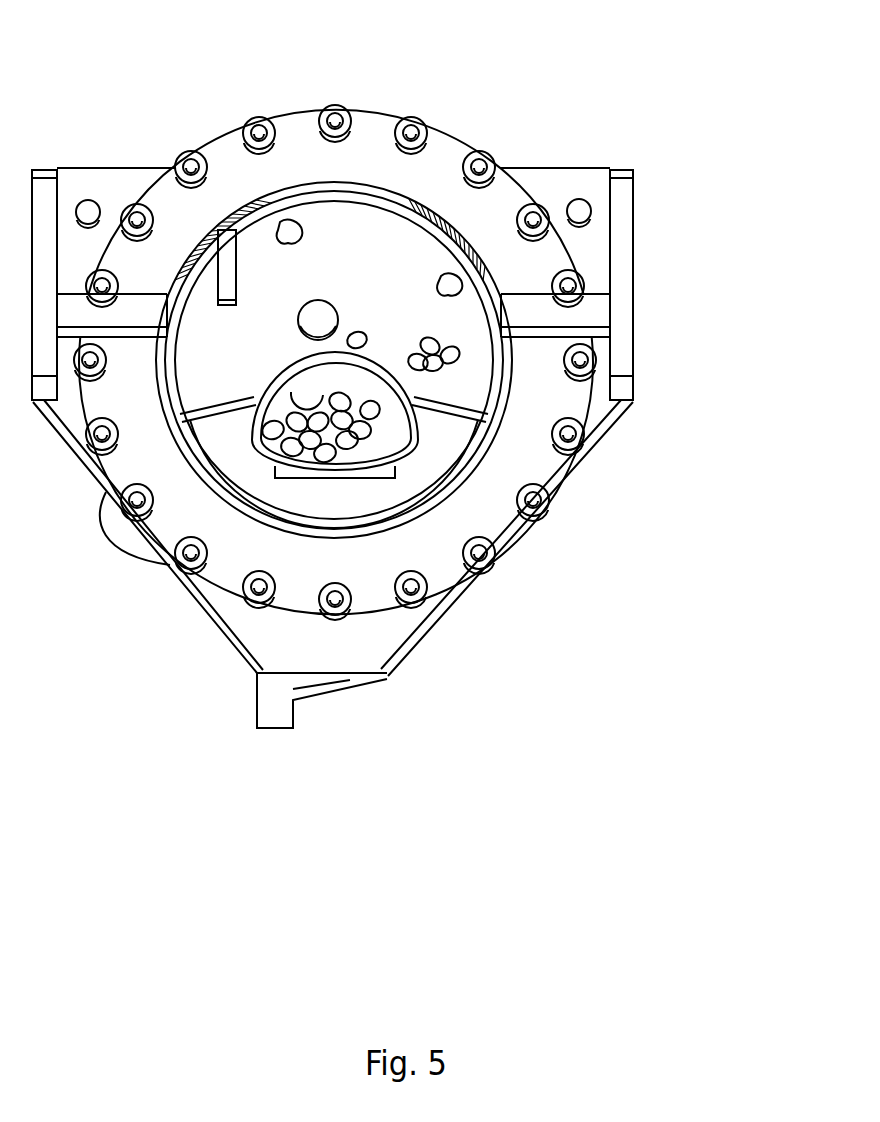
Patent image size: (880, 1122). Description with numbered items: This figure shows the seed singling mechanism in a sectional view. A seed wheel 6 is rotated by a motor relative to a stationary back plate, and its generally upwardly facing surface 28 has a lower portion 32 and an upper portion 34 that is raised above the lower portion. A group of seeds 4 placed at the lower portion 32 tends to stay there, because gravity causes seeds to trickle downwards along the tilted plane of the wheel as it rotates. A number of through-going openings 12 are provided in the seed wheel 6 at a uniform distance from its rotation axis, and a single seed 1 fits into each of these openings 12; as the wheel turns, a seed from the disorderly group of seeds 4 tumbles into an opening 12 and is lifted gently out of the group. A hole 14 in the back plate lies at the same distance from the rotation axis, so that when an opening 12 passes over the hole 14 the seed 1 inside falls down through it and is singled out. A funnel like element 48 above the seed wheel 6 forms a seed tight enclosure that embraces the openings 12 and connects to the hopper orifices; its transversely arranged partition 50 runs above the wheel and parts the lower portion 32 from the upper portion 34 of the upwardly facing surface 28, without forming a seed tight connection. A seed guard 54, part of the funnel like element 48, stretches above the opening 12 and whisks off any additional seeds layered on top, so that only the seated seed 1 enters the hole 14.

The seed 1 is at (286, 243).
The group of seeds 4 is at (308, 453).
The seed wheel 6 is at (508, 550).
The through-going openings 12 is at (308, 215).
The hole 14 is at (172, 395).
The upwardly facing surface 28 is at (450, 377).
The lower portion 32 is at (369, 453).
The upper portion 34 is at (344, 261).
The funnel like element 48 is at (357, 510).
The partition 50 is at (445, 360).
The seed guard 54 is at (230, 277).